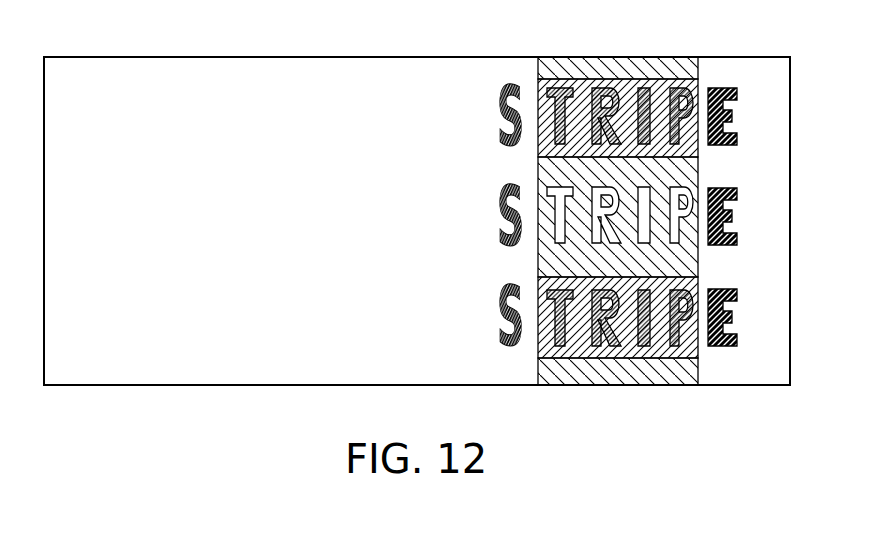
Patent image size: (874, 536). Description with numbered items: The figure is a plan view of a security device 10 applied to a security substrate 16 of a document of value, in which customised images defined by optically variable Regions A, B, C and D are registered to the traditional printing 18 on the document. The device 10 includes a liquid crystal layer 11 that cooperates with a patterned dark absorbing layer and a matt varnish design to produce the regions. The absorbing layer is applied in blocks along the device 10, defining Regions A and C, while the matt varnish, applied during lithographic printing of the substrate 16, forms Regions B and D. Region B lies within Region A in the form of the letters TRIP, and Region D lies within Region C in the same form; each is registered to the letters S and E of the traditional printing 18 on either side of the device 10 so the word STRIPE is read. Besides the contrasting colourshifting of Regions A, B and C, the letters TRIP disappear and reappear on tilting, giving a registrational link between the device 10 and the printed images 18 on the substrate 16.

The security device 10 is at (619, 202).
The liquid crystal layer 11 is at (636, 101).
The security substrate 16 is at (84, 385).
The traditional printing 18 is at (734, 117).
The optically variable Region A is at (611, 86).
The optically variable Region B is at (557, 82).
The optically variable Region C is at (619, 218).
The visually distinct Region D is at (687, 245).